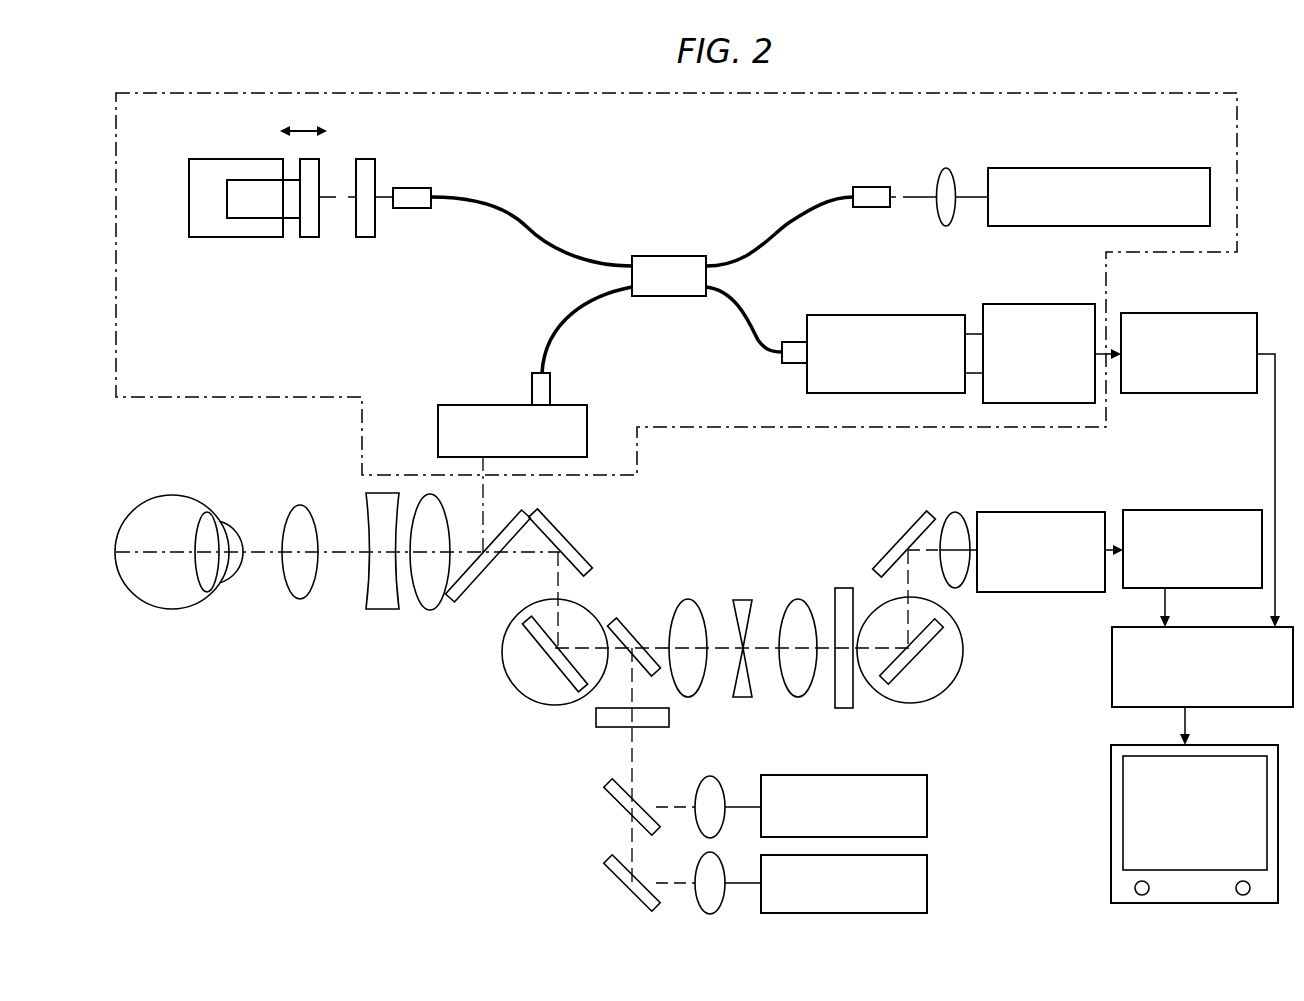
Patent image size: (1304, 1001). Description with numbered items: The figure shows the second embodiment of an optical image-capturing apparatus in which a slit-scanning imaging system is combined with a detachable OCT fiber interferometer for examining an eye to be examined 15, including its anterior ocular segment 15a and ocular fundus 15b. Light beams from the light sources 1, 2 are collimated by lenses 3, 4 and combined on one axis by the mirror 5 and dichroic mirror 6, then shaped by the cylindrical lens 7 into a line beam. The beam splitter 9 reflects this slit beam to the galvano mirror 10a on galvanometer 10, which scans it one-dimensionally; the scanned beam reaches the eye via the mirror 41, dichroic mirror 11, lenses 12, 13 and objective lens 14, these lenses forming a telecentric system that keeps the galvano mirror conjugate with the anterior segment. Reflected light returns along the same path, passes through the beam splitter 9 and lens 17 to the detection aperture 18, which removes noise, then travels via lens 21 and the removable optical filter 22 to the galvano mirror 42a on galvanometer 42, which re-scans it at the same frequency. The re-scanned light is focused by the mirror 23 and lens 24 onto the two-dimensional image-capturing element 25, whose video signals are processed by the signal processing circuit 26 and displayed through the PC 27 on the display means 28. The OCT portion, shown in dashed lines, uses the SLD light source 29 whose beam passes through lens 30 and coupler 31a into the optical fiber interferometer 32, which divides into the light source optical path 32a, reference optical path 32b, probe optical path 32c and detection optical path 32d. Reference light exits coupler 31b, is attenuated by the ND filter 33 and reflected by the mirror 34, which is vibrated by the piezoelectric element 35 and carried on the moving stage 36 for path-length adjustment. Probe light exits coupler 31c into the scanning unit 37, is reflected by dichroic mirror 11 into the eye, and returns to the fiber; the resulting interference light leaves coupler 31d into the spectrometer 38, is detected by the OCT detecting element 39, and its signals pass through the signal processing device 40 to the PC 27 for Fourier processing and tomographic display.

The light source 1 is at (927, 883).
The light source 2 is at (927, 808).
The lens 3 is at (715, 853).
The lens 4 is at (713, 776).
The mirror 5 is at (615, 886).
The dichroic mirror 6 is at (615, 812).
The cylindrical lens 7 is at (669, 718).
The beam splitter 9 is at (630, 626).
The galvanometer 10 is at (502, 665).
The galvano mirror 10a is at (527, 699).
The dichroic mirror 11 is at (480, 575).
The lens 12 is at (430, 610).
The lens 13 is at (390, 609).
The objective lens 14 is at (300, 600).
The eye to be examined 15 is at (163, 610).
The anterior ocular segment 15a is at (224, 522).
The ocular fundus 15b is at (122, 525).
The lens 17 is at (688, 600).
The detection aperture 18 is at (745, 600).
The lens 21 is at (798, 600).
The optical filter 22 is at (845, 588).
The mirror 23 is at (898, 529).
The lens 24 is at (958, 512).
The two-dimensional image-capturing element 25 is at (1030, 512).
The signal processing circuit 26 is at (1168, 510).
The PC 27 is at (1112, 663).
The display means 28 is at (1111, 805).
The SLD light source 29 is at (1065, 168).
The lens 30 is at (948, 168).
The coupler 31a is at (870, 187).
The coupler 31b is at (405, 188).
The coupler 31c is at (532, 389).
The coupler 31d is at (787, 342).
The optical fiber interferometer 32 is at (667, 256).
The light source optical path 32a is at (781, 225).
The reference optical path 32b is at (533, 222).
The probe optical path 32c is at (575, 315).
The detection optical path 32d is at (750, 342).
The ND filter 33 is at (367, 238).
The mirror 34 is at (310, 238).
The piezoelectric element 35 is at (235, 219).
The moving stage 36 is at (189, 207).
The scanning unit 37 is at (438, 427).
The spectrometer 38 is at (948, 315).
The OCT detecting element 39 is at (1040, 304).
The signal processing device 40 is at (1150, 313).
The mirror 41 is at (563, 540).
The galvanometer 42 is at (965, 650).
The galvano mirror 42a is at (940, 695).